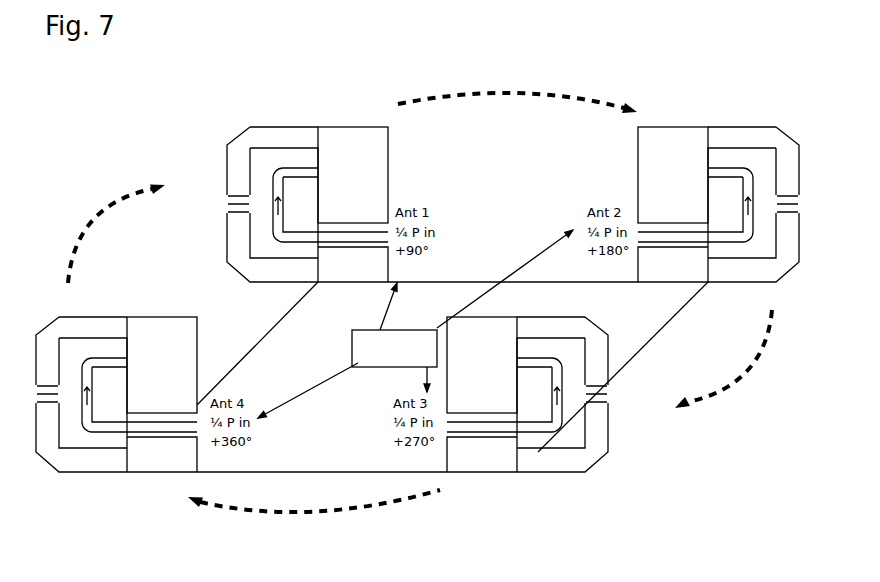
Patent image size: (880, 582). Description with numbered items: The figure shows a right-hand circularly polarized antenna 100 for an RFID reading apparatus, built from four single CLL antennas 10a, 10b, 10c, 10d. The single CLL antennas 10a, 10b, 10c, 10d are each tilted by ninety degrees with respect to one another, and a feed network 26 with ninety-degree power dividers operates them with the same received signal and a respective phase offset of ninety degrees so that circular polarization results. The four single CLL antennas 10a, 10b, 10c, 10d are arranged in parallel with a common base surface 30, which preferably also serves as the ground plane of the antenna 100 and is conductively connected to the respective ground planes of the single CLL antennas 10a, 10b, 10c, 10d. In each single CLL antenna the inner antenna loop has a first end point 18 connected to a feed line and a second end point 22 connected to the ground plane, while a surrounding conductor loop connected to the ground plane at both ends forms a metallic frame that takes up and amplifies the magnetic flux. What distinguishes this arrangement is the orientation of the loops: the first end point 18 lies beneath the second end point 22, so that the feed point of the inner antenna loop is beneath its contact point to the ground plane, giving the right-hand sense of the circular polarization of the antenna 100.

The circularly polarized antenna 100 is at (603, 78).
The single CLL antenna 10a is at (273, 140).
The single CLL antenna 10b is at (790, 140).
The single CLL antenna 10c is at (594, 464).
The single CLL antenna 10d is at (36, 440).
The second end point 22 is at (316, 155).
The first end point 18 is at (317, 247).
The feed network 26 is at (352, 358).
The common base surface 30 is at (456, 288).